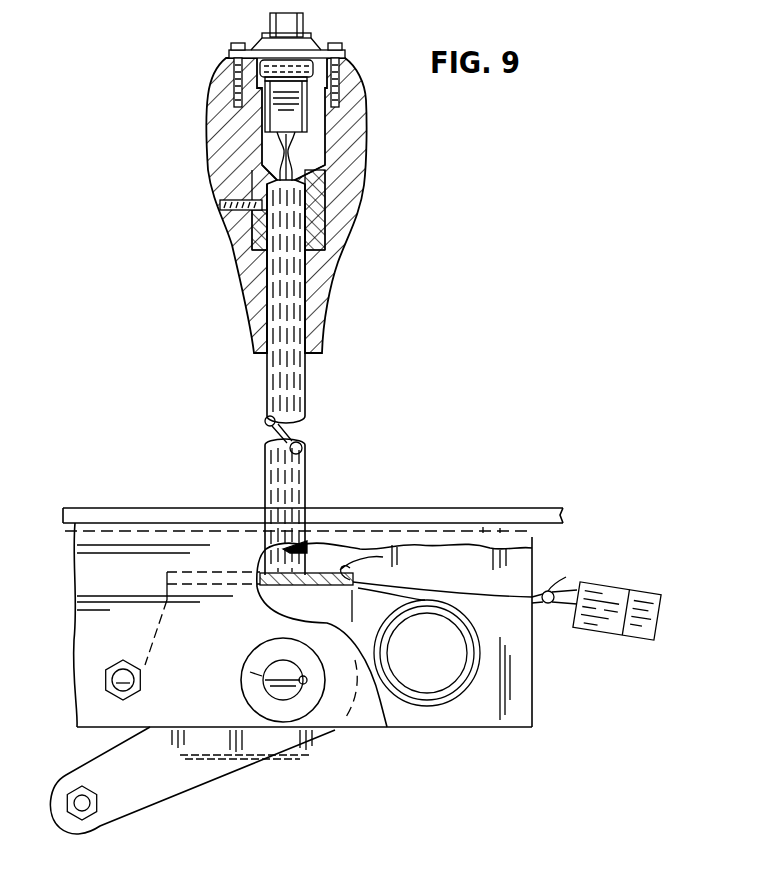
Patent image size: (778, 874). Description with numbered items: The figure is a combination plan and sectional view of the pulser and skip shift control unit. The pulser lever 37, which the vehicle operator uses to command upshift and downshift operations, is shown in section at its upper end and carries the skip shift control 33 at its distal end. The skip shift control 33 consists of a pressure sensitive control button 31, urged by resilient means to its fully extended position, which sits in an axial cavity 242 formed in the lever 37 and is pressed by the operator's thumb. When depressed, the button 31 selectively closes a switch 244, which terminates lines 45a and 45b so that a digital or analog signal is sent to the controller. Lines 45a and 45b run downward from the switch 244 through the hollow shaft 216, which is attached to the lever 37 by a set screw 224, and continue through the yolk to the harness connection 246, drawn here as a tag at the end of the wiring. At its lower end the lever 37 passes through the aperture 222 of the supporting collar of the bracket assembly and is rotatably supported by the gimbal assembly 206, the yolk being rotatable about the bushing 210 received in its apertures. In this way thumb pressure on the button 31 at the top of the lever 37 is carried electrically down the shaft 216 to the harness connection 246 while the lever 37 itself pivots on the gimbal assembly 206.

The control button 31 is at (288, 23).
The skip shift control 33 is at (291, 176).
The pulser lever 37 is at (298, 150).
The switch 244 is at (290, 110).
The axial cavity 242 is at (362, 157).
The set screw 224 is at (241, 226).
The line 45a is at (313, 303).
The line 45b is at (263, 323).
The hollow shaft 216 is at (307, 396).
The aperture 222 is at (327, 530).
The gimbal assembly 206 is at (345, 737).
The bushing 210 is at (285, 713).
The harness connection 246 is at (637, 630).